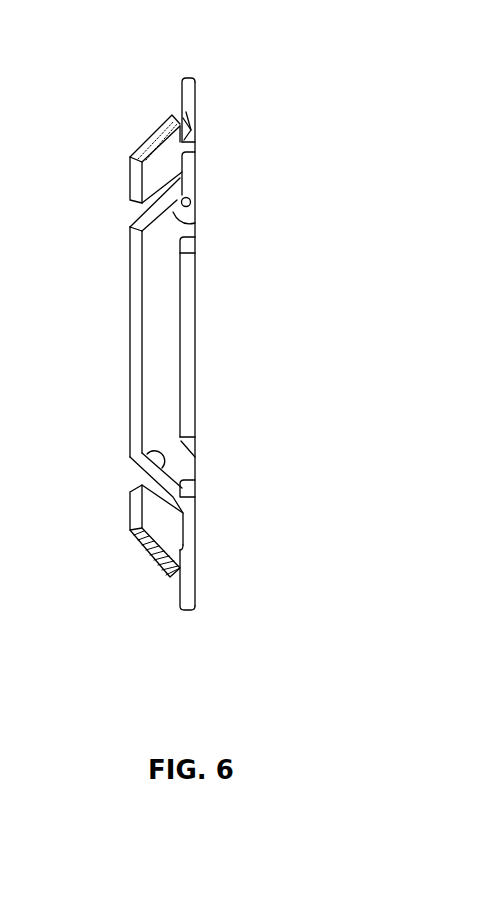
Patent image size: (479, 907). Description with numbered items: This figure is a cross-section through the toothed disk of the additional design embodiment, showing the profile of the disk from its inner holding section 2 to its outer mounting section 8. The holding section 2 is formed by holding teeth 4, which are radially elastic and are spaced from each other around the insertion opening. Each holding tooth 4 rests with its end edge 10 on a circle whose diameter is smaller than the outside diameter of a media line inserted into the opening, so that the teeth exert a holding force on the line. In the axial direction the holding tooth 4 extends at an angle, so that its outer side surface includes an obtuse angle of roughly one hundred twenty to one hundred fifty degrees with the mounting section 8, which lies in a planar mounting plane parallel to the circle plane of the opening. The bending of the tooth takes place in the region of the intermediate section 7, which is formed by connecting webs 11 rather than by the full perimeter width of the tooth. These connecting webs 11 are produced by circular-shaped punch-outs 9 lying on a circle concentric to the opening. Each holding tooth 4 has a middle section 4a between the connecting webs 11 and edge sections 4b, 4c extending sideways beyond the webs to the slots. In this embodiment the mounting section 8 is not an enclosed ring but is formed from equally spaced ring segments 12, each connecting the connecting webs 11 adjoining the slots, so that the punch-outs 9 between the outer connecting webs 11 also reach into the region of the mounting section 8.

The holding section 2 is at (128, 293).
The holding teeth 4 is at (140, 176).
The middle section 4a is at (160, 322).
The edge section 4b is at (135, 461).
The edge section 4c is at (197, 223).
The intermediate section 7 is at (195, 107).
The mounting section 8 is at (198, 91).
The punch-out 9 is at (188, 425).
The end edge 10 is at (132, 328).
The connecting web 11 is at (197, 196).
The ring segment 12 is at (198, 182).